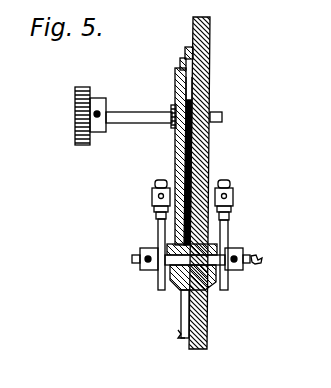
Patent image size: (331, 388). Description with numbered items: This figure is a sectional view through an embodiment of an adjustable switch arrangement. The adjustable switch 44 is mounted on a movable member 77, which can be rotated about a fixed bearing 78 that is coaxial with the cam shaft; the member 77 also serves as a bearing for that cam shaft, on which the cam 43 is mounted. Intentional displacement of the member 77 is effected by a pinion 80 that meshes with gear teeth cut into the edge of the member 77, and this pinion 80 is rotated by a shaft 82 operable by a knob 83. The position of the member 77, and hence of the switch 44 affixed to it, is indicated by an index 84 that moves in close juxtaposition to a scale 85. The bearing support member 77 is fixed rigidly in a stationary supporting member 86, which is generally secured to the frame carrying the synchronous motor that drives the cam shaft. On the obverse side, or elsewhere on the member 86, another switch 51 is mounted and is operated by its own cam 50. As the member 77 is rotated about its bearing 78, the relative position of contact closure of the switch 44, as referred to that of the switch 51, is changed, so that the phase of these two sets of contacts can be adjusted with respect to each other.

The movable member 77 is at (191, 159).
The fixed bearing 78 is at (168, 290).
The pinion 80 is at (176, 128).
The shaft 82 is at (138, 112).
The knob 83 is at (76, 91).
The index 84 is at (179, 66).
The scale 85 is at (184, 48).
The stationary supporting member 86 is at (211, 68).
The cam 43 is at (157, 240).
The adjustable switch 44 is at (151, 204).
The cam 50 is at (229, 237).
The switch 51 is at (233, 218).